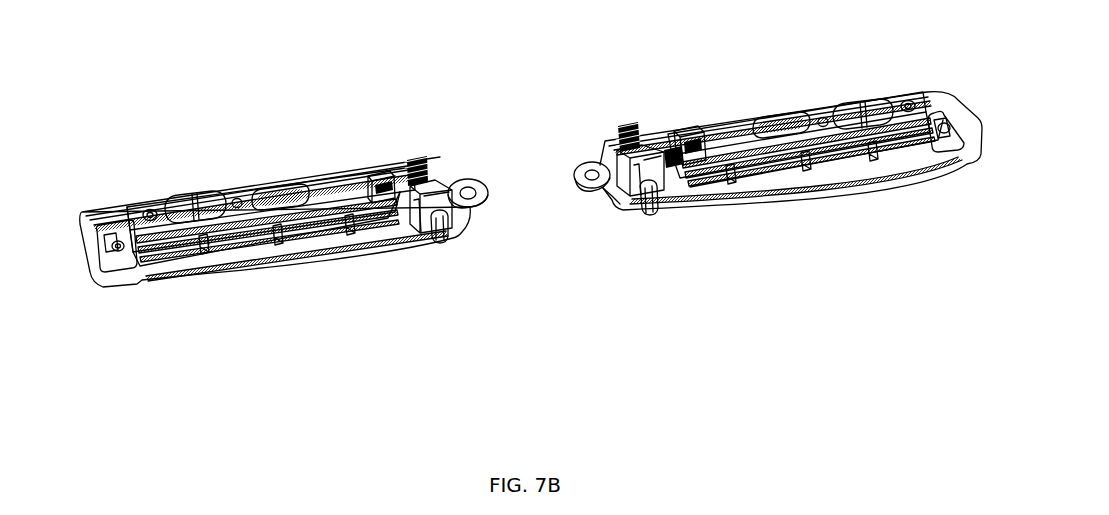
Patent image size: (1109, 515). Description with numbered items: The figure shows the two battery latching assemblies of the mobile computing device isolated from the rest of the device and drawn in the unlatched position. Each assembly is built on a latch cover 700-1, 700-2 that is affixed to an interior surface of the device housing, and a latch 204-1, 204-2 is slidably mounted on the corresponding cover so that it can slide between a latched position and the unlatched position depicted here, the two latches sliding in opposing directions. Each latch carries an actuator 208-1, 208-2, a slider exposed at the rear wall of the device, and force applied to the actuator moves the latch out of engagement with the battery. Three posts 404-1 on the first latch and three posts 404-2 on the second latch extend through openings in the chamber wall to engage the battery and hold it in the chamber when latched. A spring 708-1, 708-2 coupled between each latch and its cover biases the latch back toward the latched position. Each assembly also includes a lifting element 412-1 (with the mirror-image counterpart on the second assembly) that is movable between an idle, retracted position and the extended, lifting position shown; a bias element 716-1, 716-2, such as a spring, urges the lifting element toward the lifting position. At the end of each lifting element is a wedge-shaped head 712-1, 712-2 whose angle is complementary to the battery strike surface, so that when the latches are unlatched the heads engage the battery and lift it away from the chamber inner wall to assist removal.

The latch cover 700-1 is at (110, 277).
The latch 204-1 is at (328, 165).
The actuator 208-1 is at (178, 207).
The posts 404-1 is at (207, 252).
The spring 708-1 is at (390, 172).
The bias element 716-1 is at (414, 157).
The lifting element 412-1 is at (442, 186).
The wedge-shaped head 712-1 is at (446, 242).
The latch cover 700-2 is at (953, 168).
The latch 204-2 is at (758, 105).
The actuator 208-2 is at (866, 102).
The posts 404-2 is at (732, 183).
The spring 708-2 is at (676, 140).
The bias element 716-2 is at (620, 122).
The wedge-shaped head 712-2 is at (654, 215).